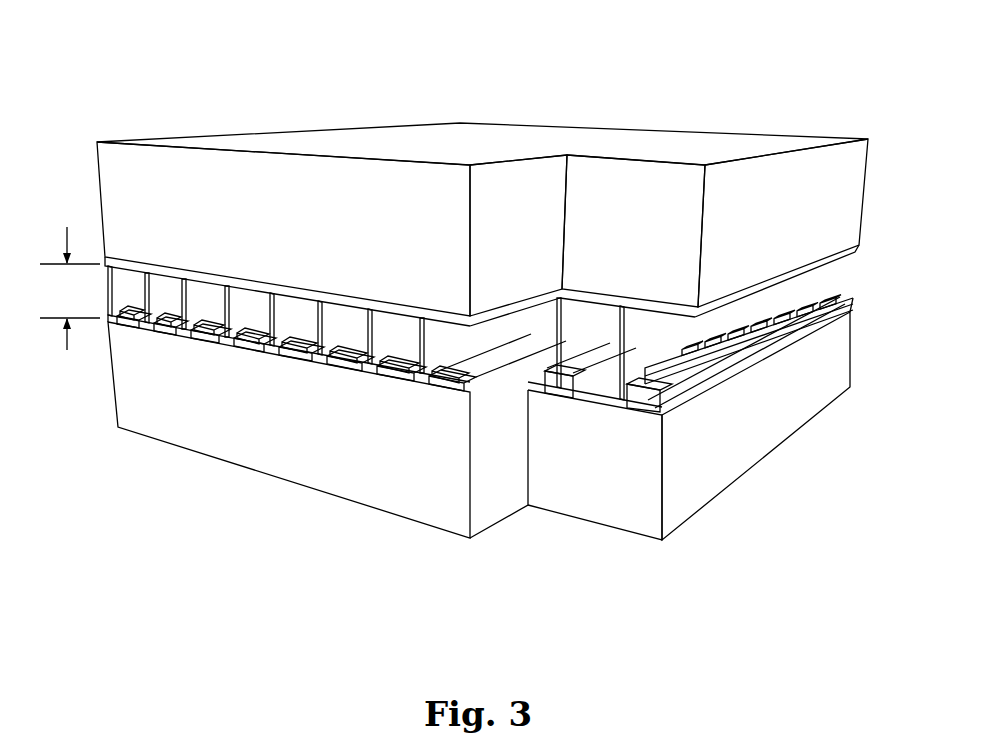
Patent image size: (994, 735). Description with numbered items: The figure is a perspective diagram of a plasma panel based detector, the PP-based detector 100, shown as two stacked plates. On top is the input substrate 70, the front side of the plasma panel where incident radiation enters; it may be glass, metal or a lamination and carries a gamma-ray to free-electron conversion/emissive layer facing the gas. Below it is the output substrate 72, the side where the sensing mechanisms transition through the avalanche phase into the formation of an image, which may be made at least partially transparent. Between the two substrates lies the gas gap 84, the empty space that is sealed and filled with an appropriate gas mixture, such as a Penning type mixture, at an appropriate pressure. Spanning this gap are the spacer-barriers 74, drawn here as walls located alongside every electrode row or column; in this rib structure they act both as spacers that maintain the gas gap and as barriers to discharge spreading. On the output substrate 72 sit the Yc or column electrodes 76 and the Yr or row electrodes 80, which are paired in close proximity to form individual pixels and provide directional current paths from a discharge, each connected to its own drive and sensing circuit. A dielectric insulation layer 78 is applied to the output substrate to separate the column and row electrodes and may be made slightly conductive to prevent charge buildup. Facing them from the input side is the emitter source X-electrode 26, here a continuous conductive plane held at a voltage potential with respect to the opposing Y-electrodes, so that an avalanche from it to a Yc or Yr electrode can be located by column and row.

The PP-based detector 100 is at (312, 127).
The input substrate 70 is at (252, 214).
The output substrate 72 is at (247, 425).
The spacer-barriers 74 is at (224, 314).
The Yc column electrodes 76 is at (640, 400).
The dielectric insulation layer 78 is at (387, 396).
The Yr row electrodes 80 is at (498, 415).
The emitter source X-electrode 26 is at (660, 369).
The gas gap 84 is at (55, 277).